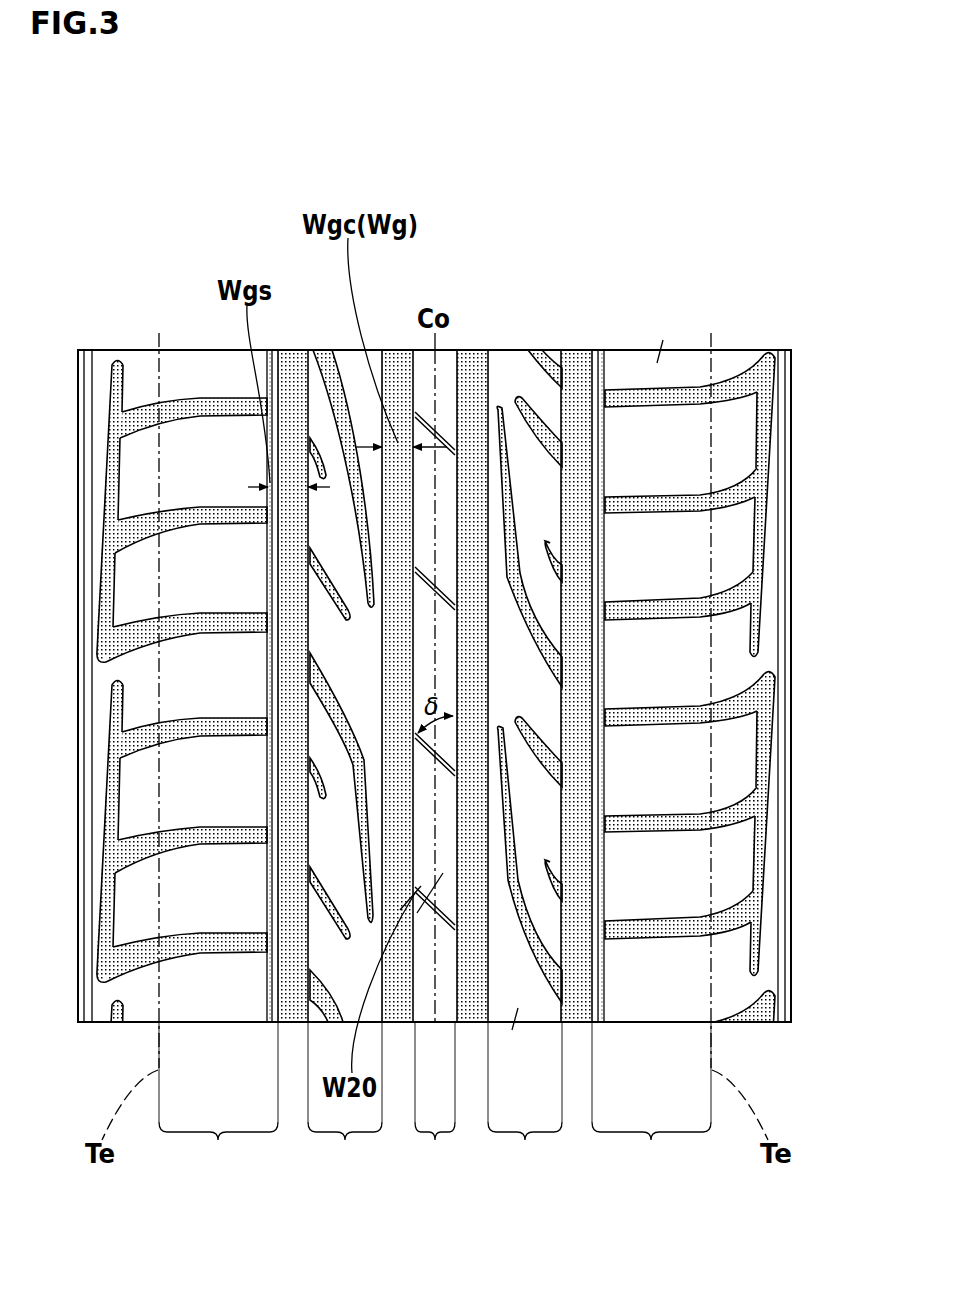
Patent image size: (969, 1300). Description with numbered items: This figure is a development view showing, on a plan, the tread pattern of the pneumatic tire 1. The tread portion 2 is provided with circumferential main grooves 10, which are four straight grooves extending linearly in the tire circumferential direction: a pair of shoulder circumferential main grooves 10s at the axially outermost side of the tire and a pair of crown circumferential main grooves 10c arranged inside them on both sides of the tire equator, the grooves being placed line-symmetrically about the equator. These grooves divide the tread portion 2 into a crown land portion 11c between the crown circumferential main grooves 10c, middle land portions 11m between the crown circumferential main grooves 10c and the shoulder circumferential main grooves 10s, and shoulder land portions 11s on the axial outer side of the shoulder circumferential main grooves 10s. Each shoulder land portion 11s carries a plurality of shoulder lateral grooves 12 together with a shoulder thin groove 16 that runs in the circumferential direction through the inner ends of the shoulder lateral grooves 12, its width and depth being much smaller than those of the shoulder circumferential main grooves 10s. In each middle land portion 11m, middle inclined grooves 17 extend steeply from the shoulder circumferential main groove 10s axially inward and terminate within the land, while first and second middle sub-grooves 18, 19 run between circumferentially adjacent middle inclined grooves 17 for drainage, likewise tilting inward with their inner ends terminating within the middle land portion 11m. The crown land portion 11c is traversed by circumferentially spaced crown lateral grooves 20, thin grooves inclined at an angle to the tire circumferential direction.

The pneumatic tire 1 is at (753, 240).
The tread portion 2 is at (748, 337).
The circumferential main grooves 10 is at (575, 380).
The shoulder circumferential main grooves 10s is at (298, 375).
The crown circumferential main grooves 10c is at (396, 375).
The shoulder land portions 11s is at (435, 1095).
The middle land portions 11m is at (435, 1095).
The crown land portion 11c is at (436, 1095).
The shoulder lateral grooves 12 is at (647, 390).
The shoulder thin grooves 16 is at (266, 982).
The middle inclined grooves 17 is at (530, 920).
The first middle sub-groove 18 is at (537, 738).
The second middle sub-groove 19 is at (548, 870).
The crown lateral grooves 20 is at (450, 922).